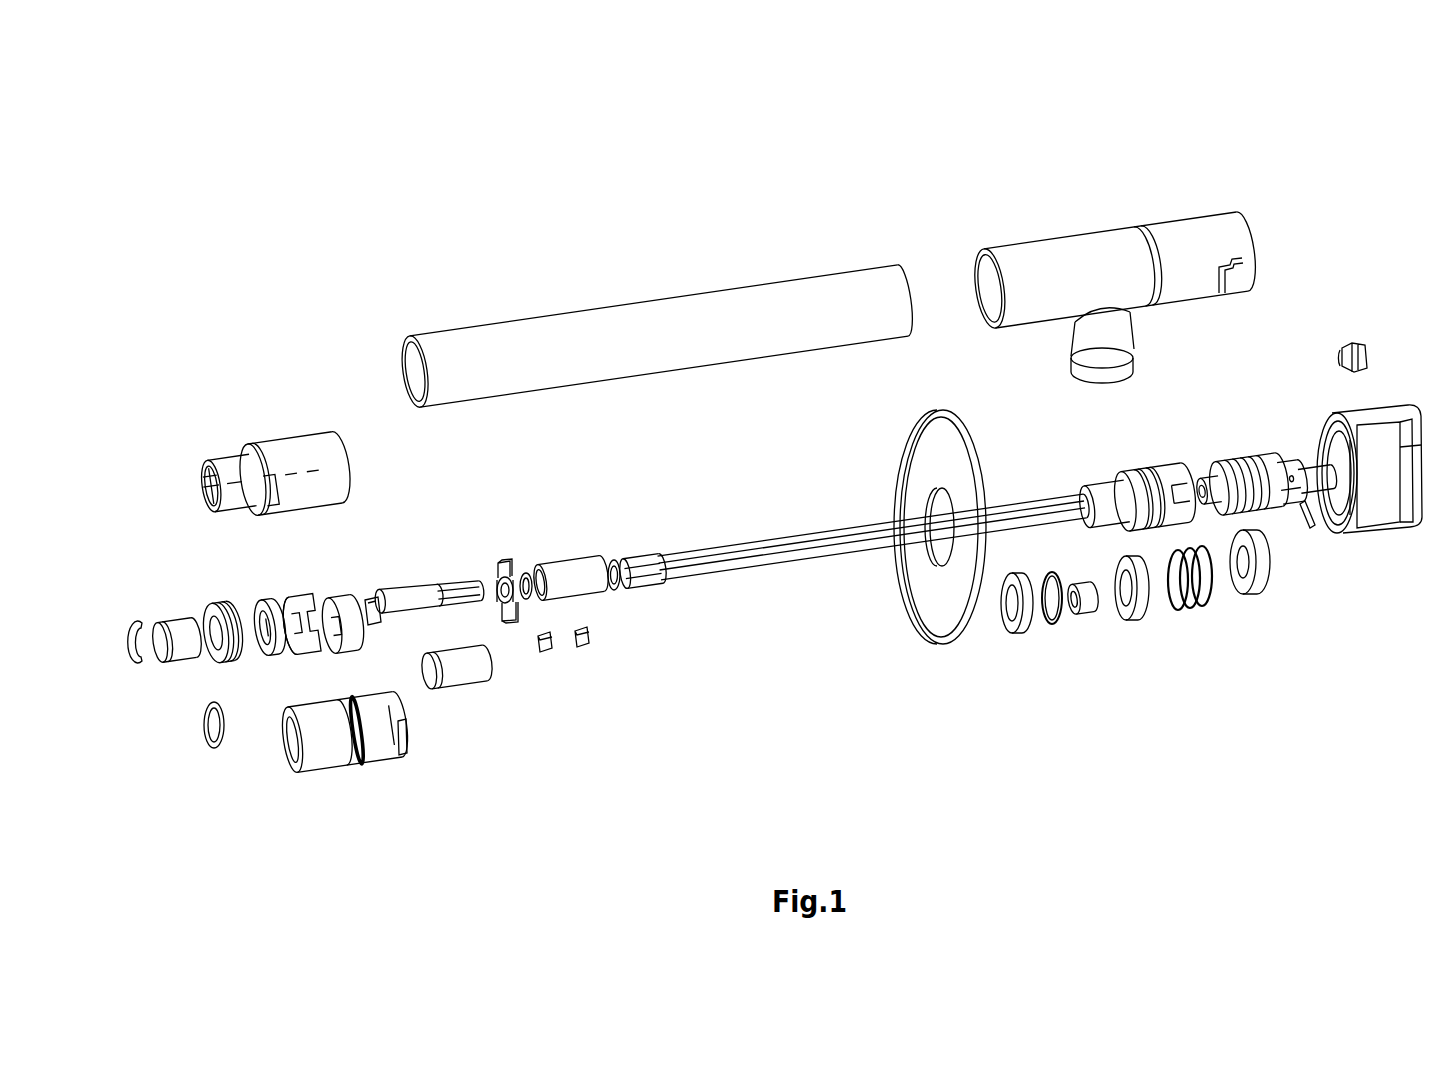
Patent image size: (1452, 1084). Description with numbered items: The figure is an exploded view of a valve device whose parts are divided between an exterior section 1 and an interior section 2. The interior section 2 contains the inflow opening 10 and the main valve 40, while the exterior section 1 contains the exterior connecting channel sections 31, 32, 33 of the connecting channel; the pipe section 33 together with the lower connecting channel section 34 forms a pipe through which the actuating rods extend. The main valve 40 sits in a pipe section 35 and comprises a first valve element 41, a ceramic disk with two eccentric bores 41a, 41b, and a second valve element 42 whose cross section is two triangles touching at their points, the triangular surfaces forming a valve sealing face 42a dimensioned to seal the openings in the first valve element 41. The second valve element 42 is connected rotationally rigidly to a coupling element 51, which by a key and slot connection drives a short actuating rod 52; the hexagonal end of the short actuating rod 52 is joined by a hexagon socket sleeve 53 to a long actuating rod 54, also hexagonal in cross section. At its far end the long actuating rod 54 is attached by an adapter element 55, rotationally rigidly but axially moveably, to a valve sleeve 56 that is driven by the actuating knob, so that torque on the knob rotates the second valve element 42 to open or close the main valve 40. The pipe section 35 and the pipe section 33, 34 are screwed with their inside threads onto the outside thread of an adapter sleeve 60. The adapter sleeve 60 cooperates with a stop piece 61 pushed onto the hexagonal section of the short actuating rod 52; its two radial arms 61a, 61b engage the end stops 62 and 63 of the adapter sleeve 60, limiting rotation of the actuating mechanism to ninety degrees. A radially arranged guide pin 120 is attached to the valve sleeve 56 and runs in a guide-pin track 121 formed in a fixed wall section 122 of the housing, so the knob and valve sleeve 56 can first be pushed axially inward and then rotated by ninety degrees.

The exterior section 1 is at (1136, 249).
The interior section 2 is at (654, 270).
The inflow opening 10 is at (190, 482).
The exterior connecting channel section 31 is at (1097, 332).
The exterior connecting channel section 32 is at (1018, 262).
The pipe section 33 is at (847, 283).
The pipe section 34 is at (473, 352).
The pipe section 35 is at (296, 447).
The main valve 40 is at (291, 606).
The first valve element 41 is at (258, 598).
The eccentric bore 41a is at (262, 600).
The eccentric bore 41b is at (260, 656).
The second valve element 42 is at (310, 593).
The valve sealing face 42a is at (296, 600).
The coupling element 51 is at (345, 598).
The short actuating rod 52 is at (430, 585).
The hexagon socket sleeve 53 is at (573, 575).
The long actuating rod 54 is at (730, 540).
The adapter element 55 is at (1108, 492).
The valve sleeve 56 is at (1268, 460).
The adapter sleeve 60 is at (372, 780).
The stop piece 61 is at (527, 593).
The arm 61a is at (506, 565).
The arm 61b is at (512, 625).
The end stop 62 is at (405, 737).
The end stop 63 is at (398, 775).
The guide pin 120 is at (1316, 545).
The guide-pin track 121 is at (1222, 314).
The wall section 122 is at (1208, 220).